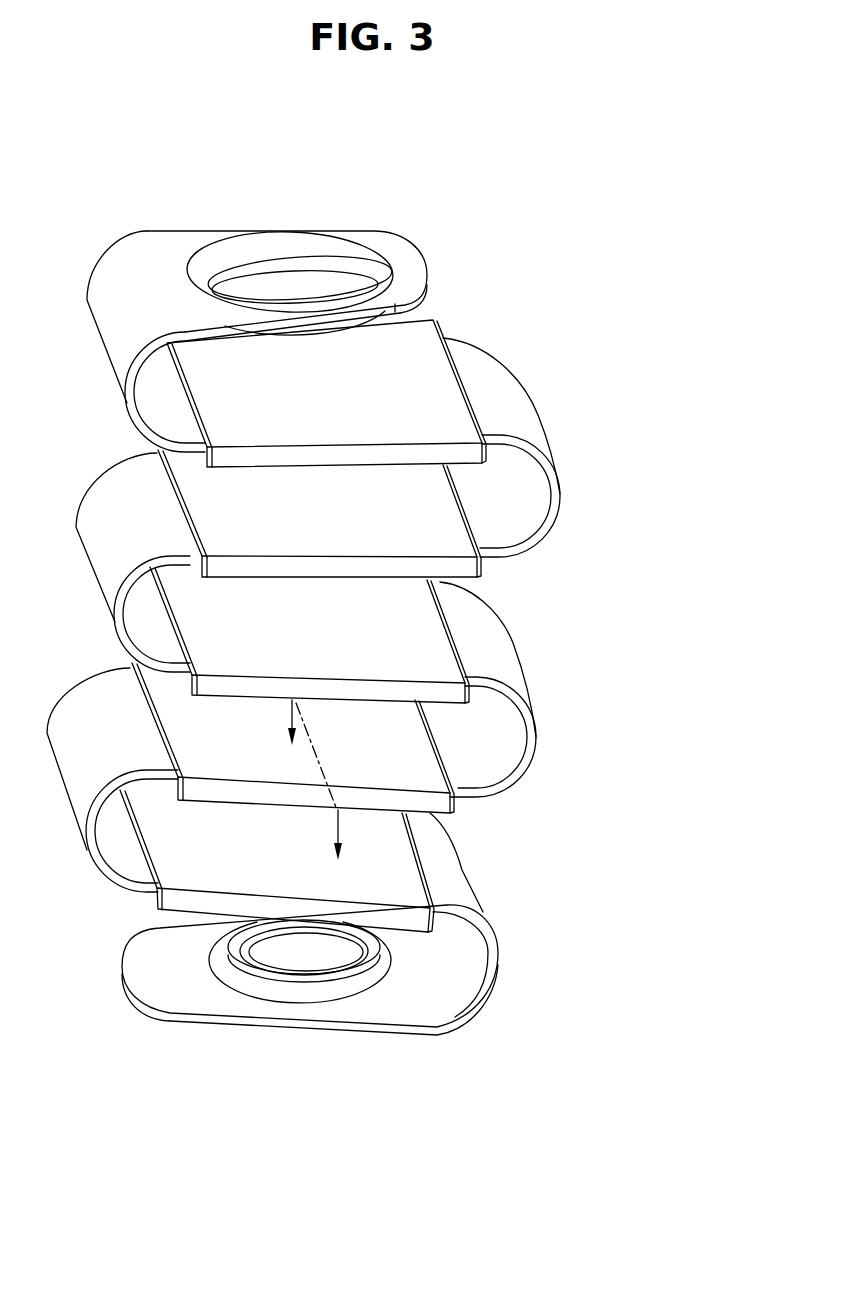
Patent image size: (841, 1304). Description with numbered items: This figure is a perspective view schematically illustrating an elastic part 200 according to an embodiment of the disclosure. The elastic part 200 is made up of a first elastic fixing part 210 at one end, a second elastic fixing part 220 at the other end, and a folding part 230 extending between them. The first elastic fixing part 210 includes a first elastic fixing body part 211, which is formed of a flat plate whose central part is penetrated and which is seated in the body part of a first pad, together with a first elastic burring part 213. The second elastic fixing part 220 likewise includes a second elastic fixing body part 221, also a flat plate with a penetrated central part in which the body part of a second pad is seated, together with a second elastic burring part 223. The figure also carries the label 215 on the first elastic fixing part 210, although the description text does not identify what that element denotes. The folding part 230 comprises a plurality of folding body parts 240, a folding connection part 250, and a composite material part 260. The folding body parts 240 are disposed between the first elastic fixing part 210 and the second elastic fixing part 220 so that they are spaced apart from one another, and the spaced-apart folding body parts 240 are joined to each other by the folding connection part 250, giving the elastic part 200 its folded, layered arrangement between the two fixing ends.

The elastic part 200 is at (477, 112).
The first elastic fixing part 210 is at (190, 1118).
The first elastic fixing body part 211 is at (200, 1000).
The first elastic burring part 213 is at (470, 1017).
The second coupling hole 215 is at (307, 985).
The second elastic fixing part 220 is at (183, 165).
The second elastic fixing body part 221 is at (193, 242).
The second elastic burring part 223 is at (322, 332).
The folding part 230 is at (637, 395).
The folding body part 240 is at (460, 620).
The folding connection part 250 is at (550, 482).
The composite material part 260 is at (443, 405).